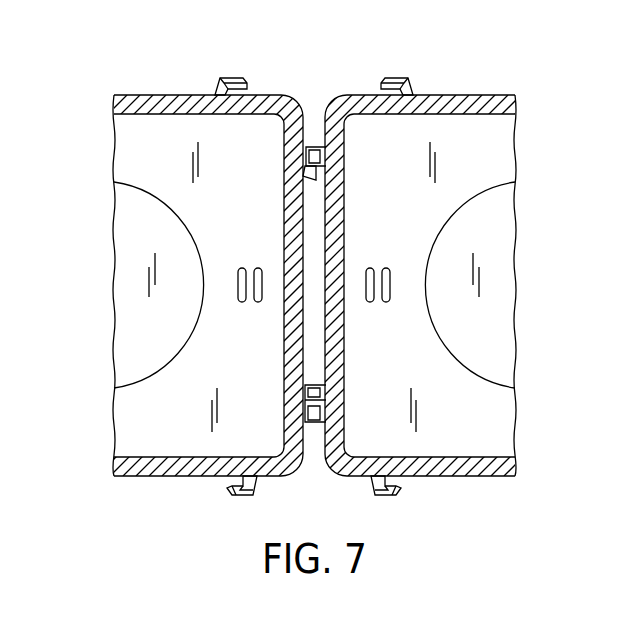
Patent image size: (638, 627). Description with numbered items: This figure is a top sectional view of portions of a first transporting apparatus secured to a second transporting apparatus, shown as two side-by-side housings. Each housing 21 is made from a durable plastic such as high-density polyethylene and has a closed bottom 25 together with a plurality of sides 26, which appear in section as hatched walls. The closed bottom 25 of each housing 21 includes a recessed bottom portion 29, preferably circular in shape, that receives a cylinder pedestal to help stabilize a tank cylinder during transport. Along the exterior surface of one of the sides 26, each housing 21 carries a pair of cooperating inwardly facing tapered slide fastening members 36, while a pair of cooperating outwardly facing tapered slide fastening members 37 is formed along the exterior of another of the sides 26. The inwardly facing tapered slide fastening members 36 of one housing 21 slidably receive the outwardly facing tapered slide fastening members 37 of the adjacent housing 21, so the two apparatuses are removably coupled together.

The housing 21 is at (156, 80).
The closed bottom 25 is at (240, 174).
The sides 26 is at (162, 114).
The recessed bottom portion 29 is at (212, 247).
The inwardly facing tapered slide fastening members 36 is at (315, 146).
The outwardly facing tapered slide fastening members 37 is at (245, 85).